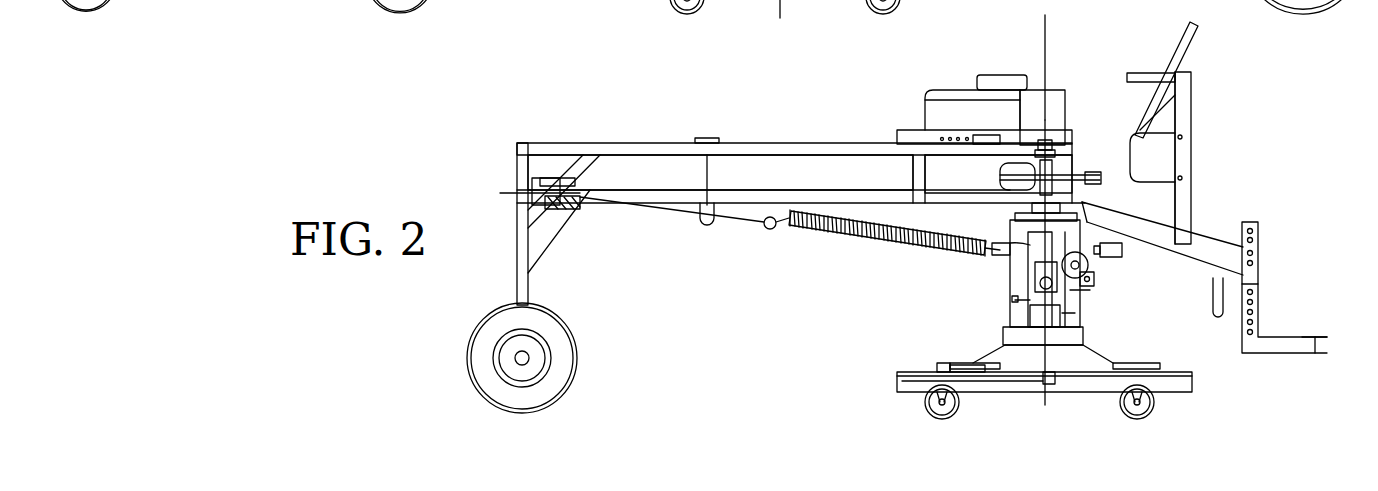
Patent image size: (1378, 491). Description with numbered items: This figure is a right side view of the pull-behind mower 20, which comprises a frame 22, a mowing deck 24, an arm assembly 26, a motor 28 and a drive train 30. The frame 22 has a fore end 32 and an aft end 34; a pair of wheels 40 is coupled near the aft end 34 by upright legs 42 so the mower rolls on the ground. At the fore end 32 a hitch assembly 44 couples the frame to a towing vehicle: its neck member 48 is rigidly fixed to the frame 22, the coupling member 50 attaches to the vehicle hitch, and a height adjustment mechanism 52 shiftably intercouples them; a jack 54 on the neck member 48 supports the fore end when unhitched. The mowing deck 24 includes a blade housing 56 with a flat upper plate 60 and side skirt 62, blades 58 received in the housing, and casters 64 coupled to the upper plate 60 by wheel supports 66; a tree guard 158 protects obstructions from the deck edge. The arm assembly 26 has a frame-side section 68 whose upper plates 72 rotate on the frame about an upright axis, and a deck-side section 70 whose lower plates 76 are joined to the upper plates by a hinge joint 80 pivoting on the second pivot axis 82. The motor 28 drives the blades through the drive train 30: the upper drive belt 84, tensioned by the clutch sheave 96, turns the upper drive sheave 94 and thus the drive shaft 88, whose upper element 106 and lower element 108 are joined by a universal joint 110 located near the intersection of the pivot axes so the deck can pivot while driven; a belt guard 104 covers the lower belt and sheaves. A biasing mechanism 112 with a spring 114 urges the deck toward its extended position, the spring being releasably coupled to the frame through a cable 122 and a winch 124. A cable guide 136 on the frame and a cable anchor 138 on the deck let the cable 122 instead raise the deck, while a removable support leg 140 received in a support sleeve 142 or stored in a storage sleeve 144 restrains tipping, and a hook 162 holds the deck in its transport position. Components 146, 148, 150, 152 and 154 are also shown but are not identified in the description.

The pull-behind mower 20 is at (588, 90).
The frame 22 is at (798, 143).
The mowing deck 24 is at (907, 358).
The arm assembly 26 is at (1077, 297).
The motor 28 is at (1000, 72).
The drive train 30 is at (1072, 313).
The fore end 32 is at (1080, 185).
The aft end 34 is at (515, 165).
The wheels 40 is at (570, 328).
The upright legs 42 is at (517, 278).
The hitch assembly 44 is at (1230, 243).
The neck member 48 is at (1127, 222).
The coupling member 50 is at (1278, 336).
The height adjustment mechanism 52 is at (1266, 222).
The jack 54 is at (1160, 258).
The blade housing 56 is at (883, 376).
The blades 58 is at (1017, 385).
The upper plate 60 is at (892, 372).
The side skirt 62 is at (945, 0).
The casters 64 is at (950, 418).
The wheel supports 66 is at (975, 384).
The frame-side section 68 is at (1008, 270).
The deck-side section 70 is at (1008, 297).
The upper plates 72 is at (1000, 226).
The lower plates 76 is at (1015, 325).
The hinge joint 80 is at (1010, 282).
The second pivot axis 82 is at (1047, 31).
The upper drive belt 84 is at (990, 172).
The drive shaft 88 is at (1018, 311).
The upper drive sheave 94 is at (1010, 182).
The clutch sheave 96 is at (1090, 180).
The belt guard 104 is at (1097, 365).
The upper element 106 is at (1028, 245).
The lower element 108 is at (1015, 330).
The universal joint 110 is at (1015, 306).
The biasing mechanism 112 is at (784, 238).
The spring 114 is at (814, 262).
The cable 122 is at (677, 215).
The winch 124 is at (548, 172).
The cable guide 136 is at (1062, 140).
The cable anchor 138 is at (1050, 385).
The removable support leg 140 is at (895, 130).
The support sleeve 142 is at (1090, 277).
The storage sleeve 144 is at (980, 140).
The handle assembly 146 is at (1192, 135).
The handle post 148 is at (1193, 93).
The handle arm 150 is at (1200, 76).
The lever 152 is at (1190, 43).
The handle box 154 is at (1146, 165).
The tree guard 158 is at (1200, 368).
The hook 162 is at (700, 183).